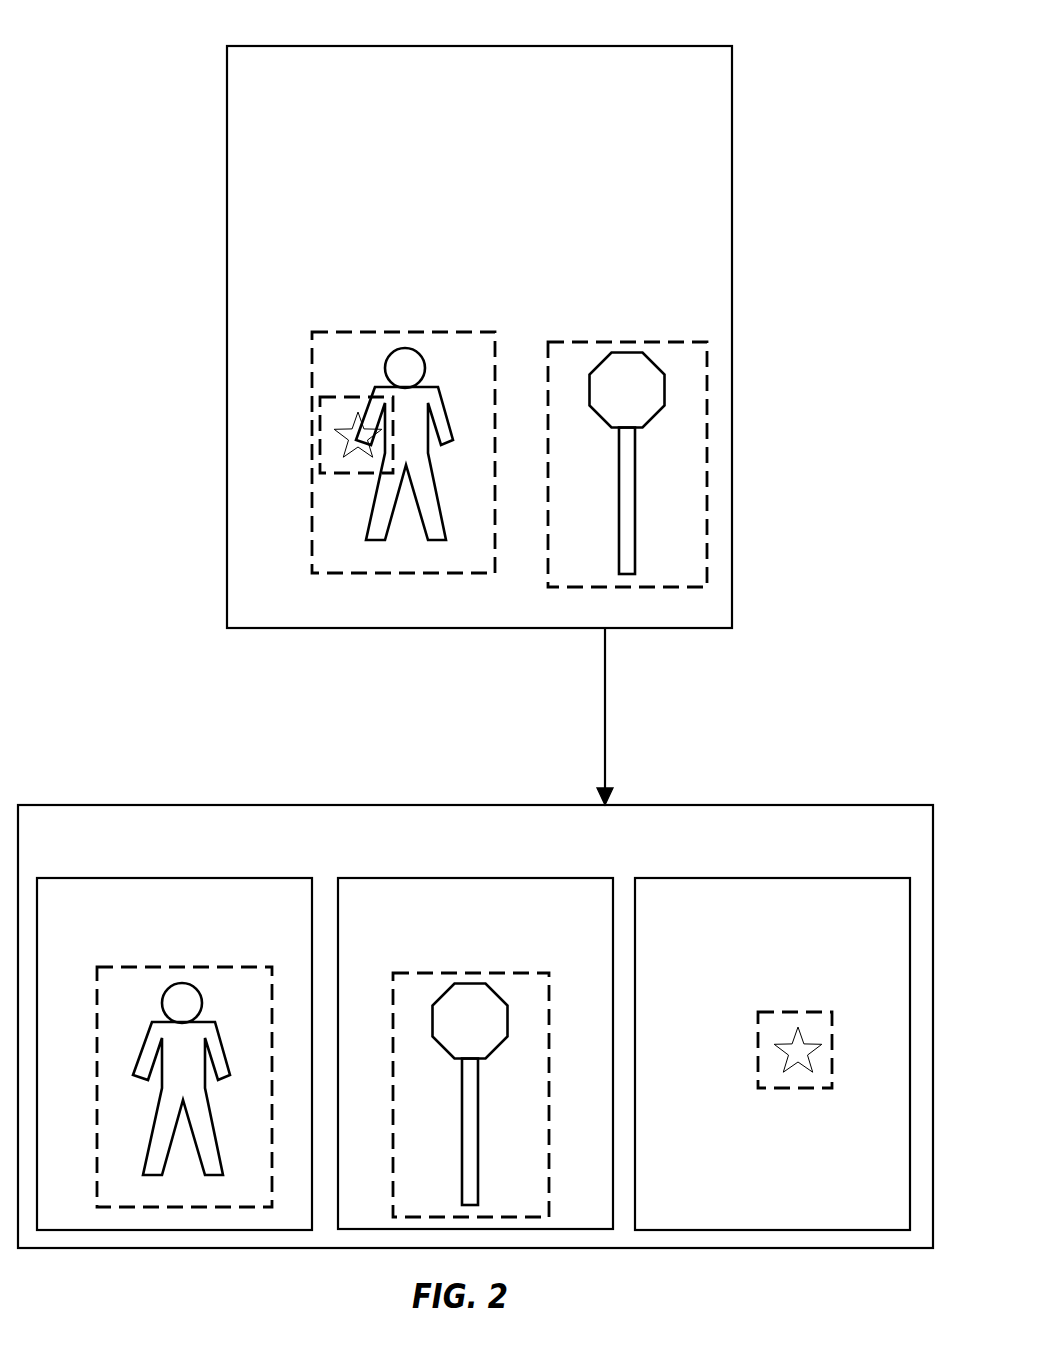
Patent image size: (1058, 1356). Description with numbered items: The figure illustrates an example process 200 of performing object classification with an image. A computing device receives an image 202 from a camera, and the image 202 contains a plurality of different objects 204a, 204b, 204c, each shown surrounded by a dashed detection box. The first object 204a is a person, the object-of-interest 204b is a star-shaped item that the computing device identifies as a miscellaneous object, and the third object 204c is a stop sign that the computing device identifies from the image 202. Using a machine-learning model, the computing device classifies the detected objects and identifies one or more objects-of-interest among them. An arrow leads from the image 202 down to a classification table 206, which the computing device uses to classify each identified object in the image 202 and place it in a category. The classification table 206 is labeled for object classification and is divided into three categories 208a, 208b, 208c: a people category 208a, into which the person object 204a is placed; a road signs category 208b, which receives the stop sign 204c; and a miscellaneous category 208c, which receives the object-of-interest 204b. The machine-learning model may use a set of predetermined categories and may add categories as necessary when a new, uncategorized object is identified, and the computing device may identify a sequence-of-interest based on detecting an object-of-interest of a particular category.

The process 200 is at (805, 18).
The image 202 is at (227, 82).
The object 204a is at (377, 331).
The object-of-interest 204b is at (327, 397).
The stop sign 204c is at (604, 342).
The classification table 206 is at (116, 805).
The category 208a is at (125, 878).
The category 208b is at (360, 878).
The category 208c is at (680, 878).